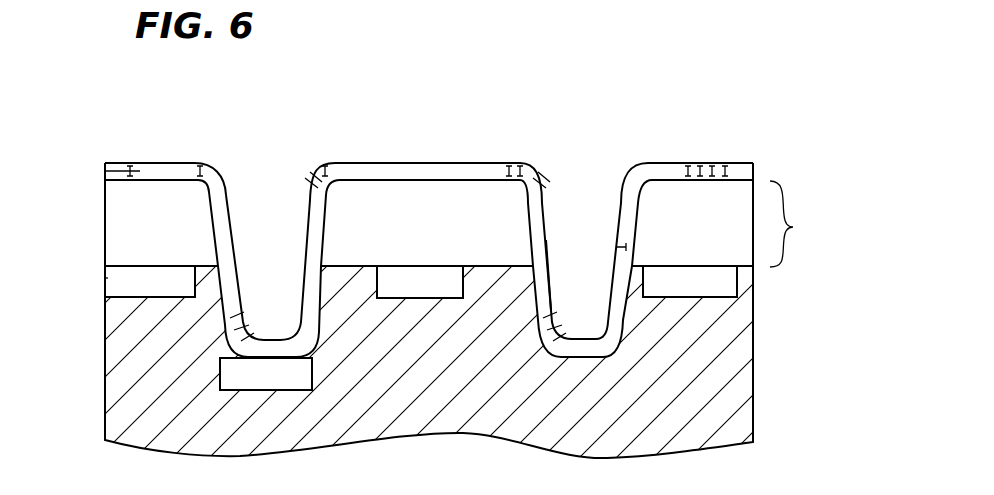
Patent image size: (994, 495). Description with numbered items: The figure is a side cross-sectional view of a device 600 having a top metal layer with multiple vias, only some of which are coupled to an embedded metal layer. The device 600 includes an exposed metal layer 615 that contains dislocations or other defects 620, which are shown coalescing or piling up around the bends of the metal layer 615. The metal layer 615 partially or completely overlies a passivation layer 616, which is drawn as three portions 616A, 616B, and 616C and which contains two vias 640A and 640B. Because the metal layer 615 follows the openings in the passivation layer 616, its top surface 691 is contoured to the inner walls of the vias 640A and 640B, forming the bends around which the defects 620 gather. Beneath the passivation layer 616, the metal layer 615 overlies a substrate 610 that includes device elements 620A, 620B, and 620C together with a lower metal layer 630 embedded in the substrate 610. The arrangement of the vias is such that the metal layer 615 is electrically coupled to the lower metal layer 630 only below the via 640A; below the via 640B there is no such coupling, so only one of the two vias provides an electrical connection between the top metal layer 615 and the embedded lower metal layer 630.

The device 600 is at (483, 77).
The substrate 610 is at (755, 355).
The metal layer 615 is at (757, 169).
The passivation layer 616 is at (809, 224).
The passivation layer portion 616A is at (123, 232).
The passivation layer portion 616B is at (389, 234).
The passivation layer portion 616C is at (663, 236).
The dislocations or other defects 620 is at (141, 171).
The device element 620A is at (124, 296).
The device element 620B is at (393, 297).
The device element 620C is at (663, 296).
The lower metal layer 630 is at (245, 389).
The via 640A is at (283, 170).
The via 640B is at (596, 168).
The top surface 691 is at (553, 291).